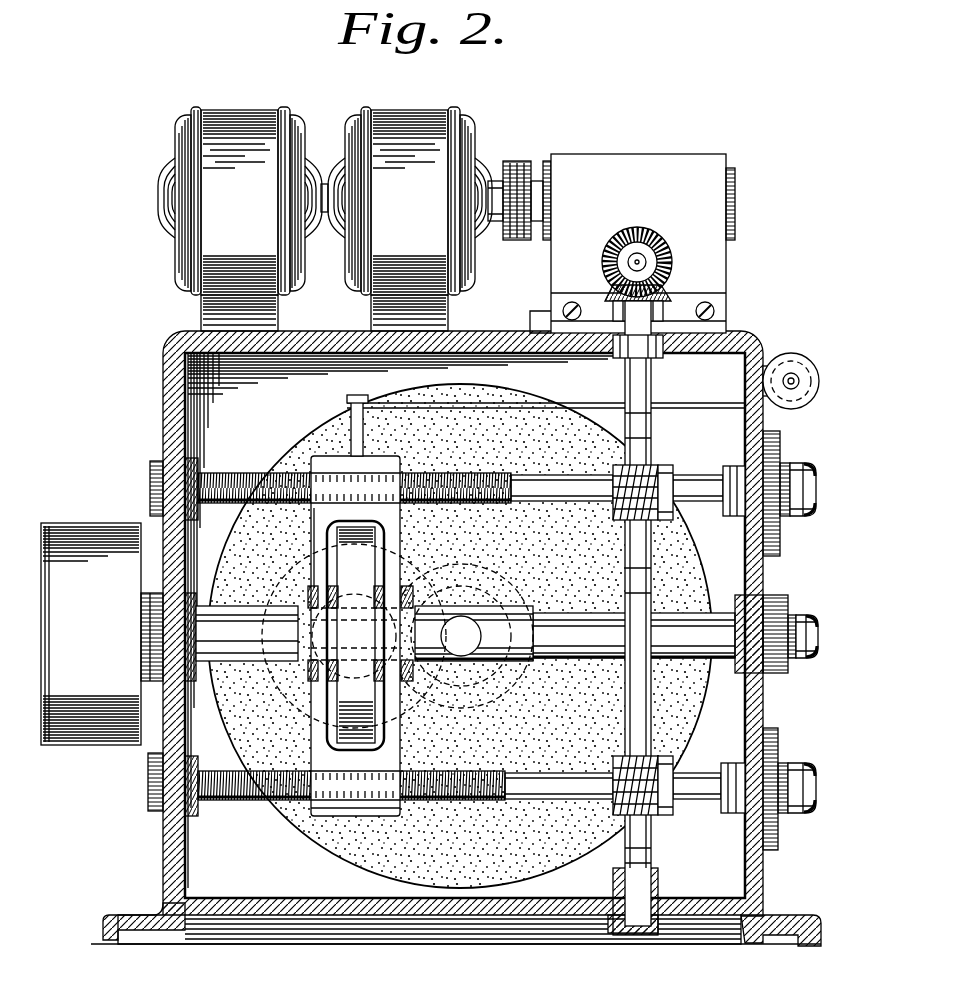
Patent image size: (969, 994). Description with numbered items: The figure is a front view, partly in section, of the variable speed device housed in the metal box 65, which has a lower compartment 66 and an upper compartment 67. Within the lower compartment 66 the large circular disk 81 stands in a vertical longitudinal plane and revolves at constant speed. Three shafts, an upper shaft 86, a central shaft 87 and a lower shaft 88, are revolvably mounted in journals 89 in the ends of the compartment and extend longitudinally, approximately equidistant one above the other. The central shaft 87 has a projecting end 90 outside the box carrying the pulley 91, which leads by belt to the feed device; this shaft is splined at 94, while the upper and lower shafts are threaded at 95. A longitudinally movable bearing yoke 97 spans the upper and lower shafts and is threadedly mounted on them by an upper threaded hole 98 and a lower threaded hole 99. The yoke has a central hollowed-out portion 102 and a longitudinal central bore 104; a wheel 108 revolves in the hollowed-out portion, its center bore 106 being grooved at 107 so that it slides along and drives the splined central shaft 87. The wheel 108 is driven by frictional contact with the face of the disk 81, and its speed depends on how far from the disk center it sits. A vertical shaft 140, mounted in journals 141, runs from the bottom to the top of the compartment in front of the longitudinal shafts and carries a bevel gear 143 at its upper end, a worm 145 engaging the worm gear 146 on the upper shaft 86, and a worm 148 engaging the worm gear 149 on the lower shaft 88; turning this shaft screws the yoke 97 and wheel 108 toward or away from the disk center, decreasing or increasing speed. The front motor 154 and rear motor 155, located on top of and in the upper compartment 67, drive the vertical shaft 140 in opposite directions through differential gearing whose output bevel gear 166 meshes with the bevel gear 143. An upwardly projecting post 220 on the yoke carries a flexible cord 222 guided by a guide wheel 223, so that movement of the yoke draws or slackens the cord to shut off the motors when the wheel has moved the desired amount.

The metal box 65 is at (150, 415).
The lower compartment 66 is at (180, 368).
The upper compartment 67 is at (658, 156).
The large circular disk 81 is at (686, 528).
The upper shaft 86 is at (465, 489).
The central shaft 87 is at (474, 637).
The lower shaft 88 is at (465, 786).
The journals 89 is at (142, 460).
The projecting end 90 is at (133, 614).
The pulley 91 is at (96, 518).
The splined portion 94 is at (478, 610).
The threaded portion 95 is at (228, 466).
The bearing yoke 97 is at (308, 543).
The upper threaded hole 98 is at (315, 450).
The lower threaded hole 99 is at (320, 766).
The central hollowed-out portion 102 is at (380, 530).
The longitudinal central bore 104 is at (328, 564).
The center bore 106 is at (330, 637).
The groove 107 is at (323, 650).
The wheel 108 is at (354, 617).
The shaft 140 is at (628, 571).
The journals 141 is at (648, 346).
The bevel gear 143 is at (664, 292).
The worm 145 is at (667, 460).
The worm gear 146 is at (640, 420).
The worm 148 is at (676, 800).
The worm gear 149 is at (648, 851).
The front motor 154 is at (390, 107).
The rear motor 155 is at (224, 103).
The bevel gear 166 is at (664, 255).
The post 220 is at (343, 425).
The flexible cord 222 is at (600, 394).
The guide wheel 223 is at (784, 346).